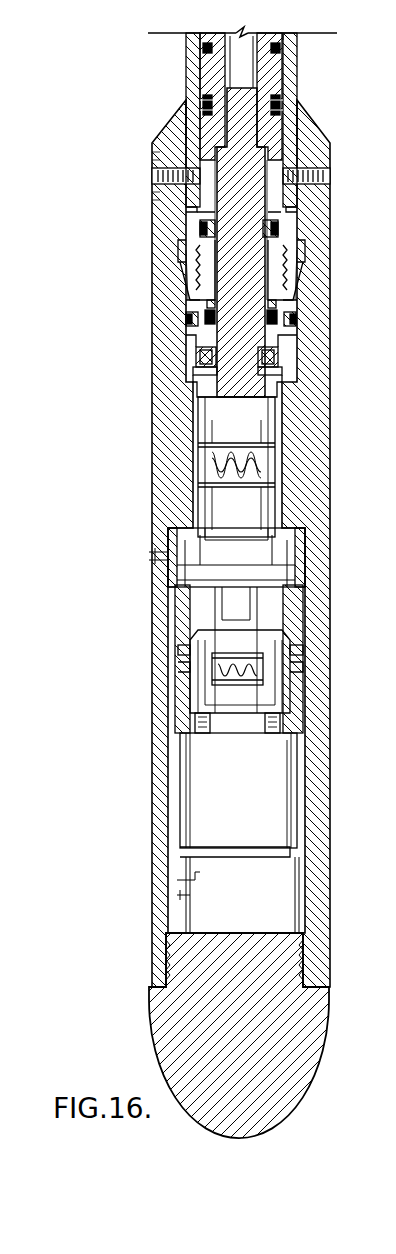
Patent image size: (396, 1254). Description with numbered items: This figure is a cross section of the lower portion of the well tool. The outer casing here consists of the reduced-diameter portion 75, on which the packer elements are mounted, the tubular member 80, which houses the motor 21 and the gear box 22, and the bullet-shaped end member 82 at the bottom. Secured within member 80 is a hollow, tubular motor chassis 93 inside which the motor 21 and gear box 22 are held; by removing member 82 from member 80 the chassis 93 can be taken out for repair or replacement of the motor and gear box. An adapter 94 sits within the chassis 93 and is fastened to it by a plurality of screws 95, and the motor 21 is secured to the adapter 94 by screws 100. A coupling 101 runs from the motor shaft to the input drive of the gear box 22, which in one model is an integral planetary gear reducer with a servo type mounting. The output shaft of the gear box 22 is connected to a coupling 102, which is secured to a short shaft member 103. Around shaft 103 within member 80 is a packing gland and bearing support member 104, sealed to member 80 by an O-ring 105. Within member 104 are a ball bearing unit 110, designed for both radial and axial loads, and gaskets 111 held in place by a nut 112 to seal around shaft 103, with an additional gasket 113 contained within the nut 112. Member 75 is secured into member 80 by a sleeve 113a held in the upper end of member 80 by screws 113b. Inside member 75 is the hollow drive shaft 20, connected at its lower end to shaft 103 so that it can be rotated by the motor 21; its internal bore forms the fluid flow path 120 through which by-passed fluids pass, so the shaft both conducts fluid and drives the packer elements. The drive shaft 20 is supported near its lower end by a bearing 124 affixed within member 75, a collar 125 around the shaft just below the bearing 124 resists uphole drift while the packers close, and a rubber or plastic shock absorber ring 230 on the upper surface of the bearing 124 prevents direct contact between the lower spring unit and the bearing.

The hollow drive shaft 20 is at (279, 45).
The motor 21 is at (242, 799).
The gear box 22 is at (239, 585).
The portion of outer casing 75 is at (186, 62).
The tubular member 80 is at (150, 486).
The bullet-shaped end member 82 is at (151, 1038).
The motor chassis 93 is at (300, 880).
The adapter 94 is at (190, 677).
The screws 95 is at (178, 650).
The screws 100 is at (272, 730).
The coupling 101 is at (263, 677).
The coupling 102 is at (200, 463).
The short shaft member 103 is at (215, 392).
The packing gland and bearing support member 104 is at (196, 353).
The O-ring 105 is at (186, 325).
The ball bearing unit 110 is at (193, 370).
The gaskets 111 is at (278, 302).
The nut 112 is at (292, 250).
The gasket 113 is at (278, 226).
The sleeve 113a is at (183, 106).
The screws 113b is at (152, 176).
The fluid flow path 120 is at (238, 48).
The bearing 124 is at (283, 62).
The collar 125 is at (276, 97).
The shock absorber ring 230 is at (203, 47).